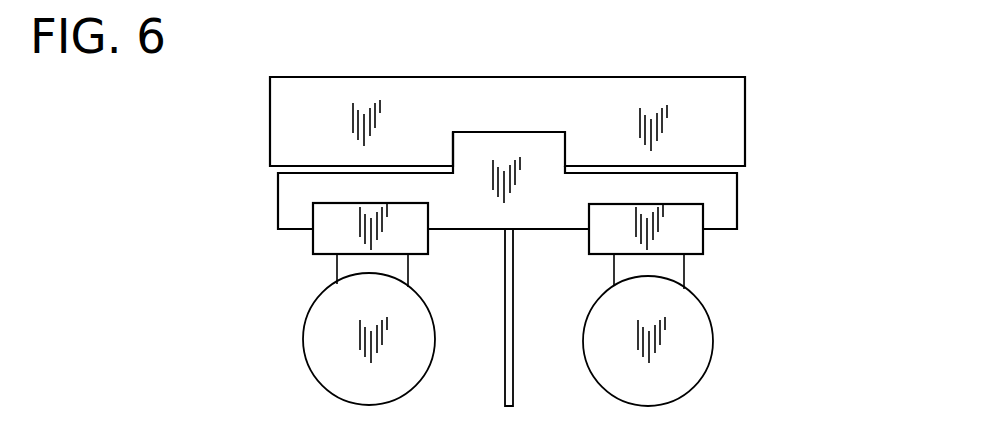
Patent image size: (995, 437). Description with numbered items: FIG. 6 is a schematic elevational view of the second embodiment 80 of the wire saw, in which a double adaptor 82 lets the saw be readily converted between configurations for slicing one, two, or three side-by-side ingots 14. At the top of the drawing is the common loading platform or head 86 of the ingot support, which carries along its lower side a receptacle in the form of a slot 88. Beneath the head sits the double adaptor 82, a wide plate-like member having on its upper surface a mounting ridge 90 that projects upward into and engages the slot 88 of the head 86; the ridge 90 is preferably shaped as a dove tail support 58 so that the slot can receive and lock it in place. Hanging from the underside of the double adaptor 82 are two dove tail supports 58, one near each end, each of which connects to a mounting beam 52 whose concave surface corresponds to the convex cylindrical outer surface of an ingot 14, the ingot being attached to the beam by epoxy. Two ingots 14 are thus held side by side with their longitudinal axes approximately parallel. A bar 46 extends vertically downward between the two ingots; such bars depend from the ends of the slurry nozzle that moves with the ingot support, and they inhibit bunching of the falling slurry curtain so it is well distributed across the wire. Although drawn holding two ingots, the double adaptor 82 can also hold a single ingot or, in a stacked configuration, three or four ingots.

The ingot 14 is at (435, 339).
The bar 46 is at (514, 270).
The mounting beam 52 is at (337, 272).
The dove tail support 58 is at (313, 240).
The second embodiment 80 is at (635, 50).
The double adaptor 82 is at (737, 204).
The head 86 is at (745, 125).
The slot 88 is at (453, 158).
The mounting ridge 90 is at (527, 132).